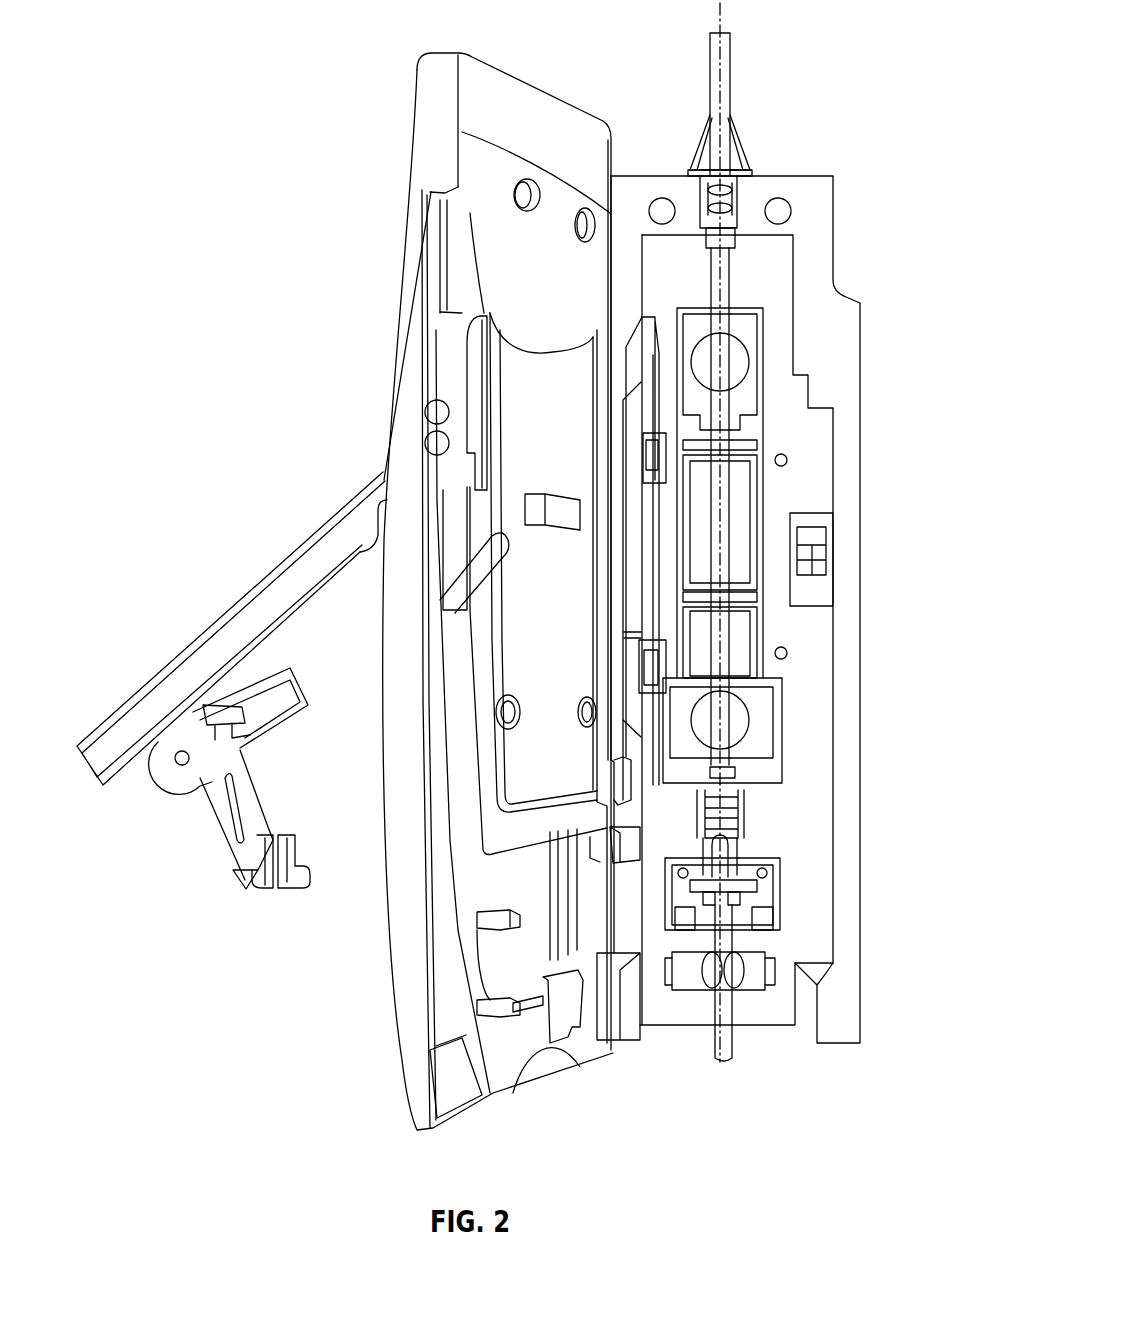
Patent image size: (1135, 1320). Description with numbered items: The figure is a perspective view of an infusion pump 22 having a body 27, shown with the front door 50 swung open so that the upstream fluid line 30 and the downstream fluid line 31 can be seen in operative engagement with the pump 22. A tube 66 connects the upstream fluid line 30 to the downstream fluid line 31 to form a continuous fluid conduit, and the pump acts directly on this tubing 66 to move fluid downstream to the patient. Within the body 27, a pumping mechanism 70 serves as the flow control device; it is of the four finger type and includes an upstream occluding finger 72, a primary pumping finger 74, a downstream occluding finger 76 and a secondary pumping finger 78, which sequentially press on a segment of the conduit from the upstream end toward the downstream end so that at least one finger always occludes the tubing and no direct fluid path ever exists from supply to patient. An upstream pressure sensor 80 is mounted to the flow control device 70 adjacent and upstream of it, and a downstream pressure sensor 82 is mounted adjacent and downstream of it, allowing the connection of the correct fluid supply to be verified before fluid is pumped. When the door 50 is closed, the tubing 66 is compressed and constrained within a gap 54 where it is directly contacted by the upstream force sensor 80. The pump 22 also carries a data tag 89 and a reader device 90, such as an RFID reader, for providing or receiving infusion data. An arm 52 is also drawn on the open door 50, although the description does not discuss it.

The infusion pump 22 is at (806, 176).
The body 27 is at (808, 898).
The upstream fluid line 30 is at (731, 48).
The downstream fluid line 31 is at (735, 1047).
The front door 50 is at (428, 107).
The arm 52 is at (196, 616).
The gap 54 is at (735, 198).
The tube 66 is at (724, 274).
The pumping mechanism 70 is at (797, 395).
The upstream occluding finger 72 is at (760, 445).
The primary pumping finger 74 is at (745, 503).
The downstream occluding finger 76 is at (808, 567).
The secondary pumping finger 78 is at (748, 636).
The upstream pressure sensor 80 is at (752, 355).
The downstream pressure sensor 82 is at (752, 723).
The data tag 89 is at (792, 211).
The reader device 90 is at (662, 197).